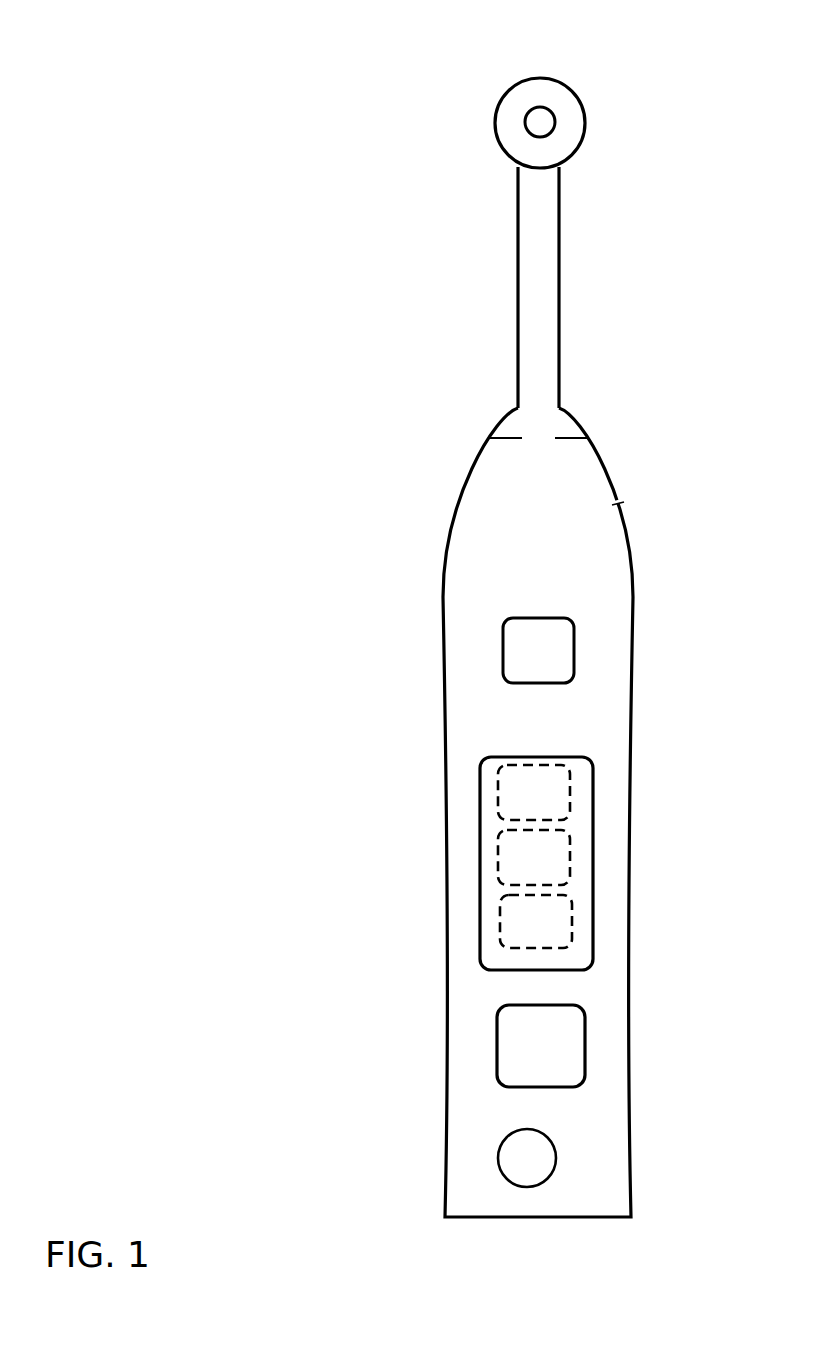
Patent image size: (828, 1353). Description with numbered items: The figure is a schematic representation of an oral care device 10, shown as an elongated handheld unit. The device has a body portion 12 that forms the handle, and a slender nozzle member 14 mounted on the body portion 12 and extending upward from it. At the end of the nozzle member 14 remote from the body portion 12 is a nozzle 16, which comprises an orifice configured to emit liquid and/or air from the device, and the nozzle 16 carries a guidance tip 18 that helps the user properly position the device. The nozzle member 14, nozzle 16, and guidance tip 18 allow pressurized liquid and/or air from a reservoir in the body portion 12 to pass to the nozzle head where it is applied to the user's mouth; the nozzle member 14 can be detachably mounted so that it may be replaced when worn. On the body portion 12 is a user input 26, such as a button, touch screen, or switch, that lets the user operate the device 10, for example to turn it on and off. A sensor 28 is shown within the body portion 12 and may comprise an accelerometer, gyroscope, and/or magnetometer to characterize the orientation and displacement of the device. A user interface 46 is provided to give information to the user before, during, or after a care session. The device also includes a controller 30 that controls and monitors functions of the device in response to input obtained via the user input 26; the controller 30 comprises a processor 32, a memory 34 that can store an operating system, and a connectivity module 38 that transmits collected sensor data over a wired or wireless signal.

The oral care device 10 is at (348, 80).
The body portion 12 is at (426, 600).
The nozzle member 14 is at (496, 318).
The nozzle 16 is at (575, 155).
The guidance tip 18 is at (554, 119).
The user input 26 is at (497, 1154).
The sensor 28 is at (563, 648).
The controller 30 is at (487, 835).
The processor 32 is at (562, 793).
The memory 34 is at (562, 855).
The connectivity module 38 is at (572, 920).
The user interface 46 is at (572, 1042).